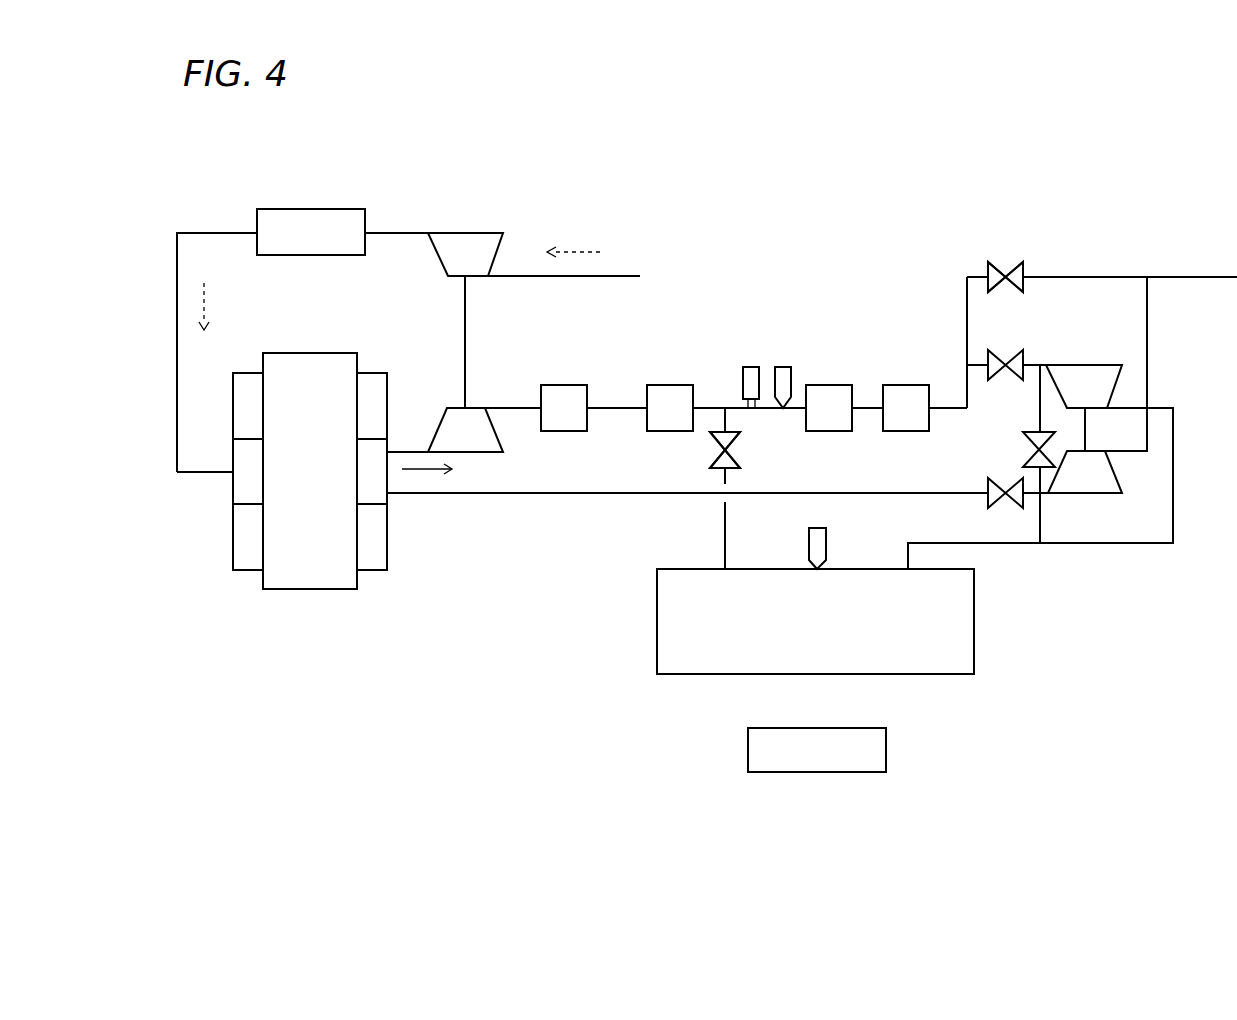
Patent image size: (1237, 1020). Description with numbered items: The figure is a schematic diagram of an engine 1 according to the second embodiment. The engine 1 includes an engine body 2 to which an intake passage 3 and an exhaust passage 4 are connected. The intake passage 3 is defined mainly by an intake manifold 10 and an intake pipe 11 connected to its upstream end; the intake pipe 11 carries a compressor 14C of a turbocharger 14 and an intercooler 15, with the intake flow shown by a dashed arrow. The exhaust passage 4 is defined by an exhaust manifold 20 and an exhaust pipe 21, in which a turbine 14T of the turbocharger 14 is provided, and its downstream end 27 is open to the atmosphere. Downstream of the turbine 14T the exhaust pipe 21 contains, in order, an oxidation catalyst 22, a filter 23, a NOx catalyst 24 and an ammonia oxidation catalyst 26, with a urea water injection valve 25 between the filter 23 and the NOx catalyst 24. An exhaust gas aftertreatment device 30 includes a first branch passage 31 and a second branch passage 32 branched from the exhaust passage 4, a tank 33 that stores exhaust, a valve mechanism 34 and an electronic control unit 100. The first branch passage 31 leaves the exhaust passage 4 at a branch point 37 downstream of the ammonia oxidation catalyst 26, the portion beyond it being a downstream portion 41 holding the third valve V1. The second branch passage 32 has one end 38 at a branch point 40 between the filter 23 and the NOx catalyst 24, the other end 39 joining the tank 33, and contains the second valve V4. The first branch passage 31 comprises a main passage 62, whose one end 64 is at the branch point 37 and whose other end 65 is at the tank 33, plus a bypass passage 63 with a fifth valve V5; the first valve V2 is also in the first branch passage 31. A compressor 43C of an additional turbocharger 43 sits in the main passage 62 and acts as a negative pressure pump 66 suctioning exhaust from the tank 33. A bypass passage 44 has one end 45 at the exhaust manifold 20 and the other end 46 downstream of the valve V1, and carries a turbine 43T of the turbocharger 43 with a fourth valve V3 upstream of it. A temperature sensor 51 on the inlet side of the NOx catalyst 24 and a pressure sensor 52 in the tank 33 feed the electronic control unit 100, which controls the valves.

The engine 1 is at (219, 160).
The engine body 2 is at (310, 589).
The intake passage 3 is at (197, 232).
The exhaust passage 4 is at (629, 407).
The intake manifold 10 is at (243, 570).
The intake pipe 11 is at (230, 232).
The turbocharger 14 is at (502, 325).
The compressor 14C is at (490, 232).
The turbine 14T is at (487, 453).
The intercooler 15 is at (307, 209).
The exhaust manifold 20 is at (372, 570).
The exhaust pipe 21 is at (601, 407).
The oxidation catalyst 22 is at (562, 385).
The filter 23 is at (675, 385).
The NOx catalyst 24 is at (830, 385).
The urea water injection valve 25 is at (744, 367).
The ammonia oxidation catalyst 26 is at (903, 385).
The downstream end 27 is at (1190, 277).
The exhaust gas aftertreatment device 30 is at (749, 337).
The first branch passage 31 is at (1176, 507).
The second branch passage 32 is at (726, 535).
The tank 33 is at (975, 620).
The valve mechanism 34 is at (1026, 242).
The branch point 37 is at (966, 364).
The one end 38 is at (723, 420).
The other end 39 is at (726, 549).
The branch point 40 is at (723, 408).
The downstream portion 41 is at (1088, 277).
The turbocharger 43 is at (1091, 429).
The compressor 43C is at (1085, 365).
The turbine 43T is at (1121, 502).
The bypass passage 44 is at (565, 498).
The one end 45 is at (418, 498).
The other end 46 is at (1148, 316).
The temperature sensor 51 is at (783, 367).
The pressure sensor 52 is at (817, 528).
The main passage 62 is at (1174, 449).
The bypass passage 63 is at (1040, 528).
The one end 64 is at (985, 364).
The other end 65 is at (908, 560).
The negative pressure pump 66 is at (1079, 367).
The electronic control unit 100 is at (815, 772).
The third valve V1 is at (1005, 266).
The first valve V2 is at (1005, 354).
The fourth valve V3 is at (1005, 482).
The second valve V4 is at (733, 450).
The fifth valve V5 is at (1047, 439).